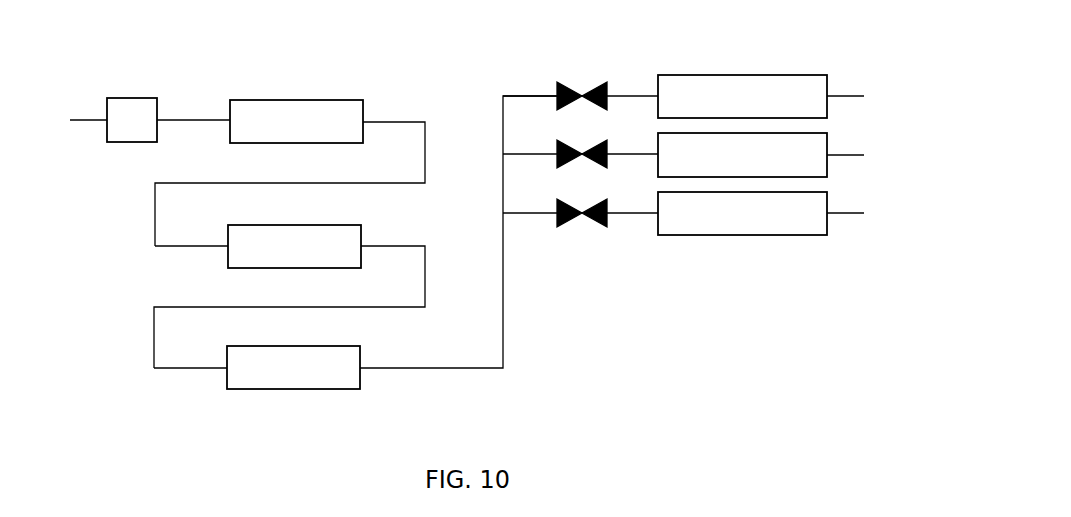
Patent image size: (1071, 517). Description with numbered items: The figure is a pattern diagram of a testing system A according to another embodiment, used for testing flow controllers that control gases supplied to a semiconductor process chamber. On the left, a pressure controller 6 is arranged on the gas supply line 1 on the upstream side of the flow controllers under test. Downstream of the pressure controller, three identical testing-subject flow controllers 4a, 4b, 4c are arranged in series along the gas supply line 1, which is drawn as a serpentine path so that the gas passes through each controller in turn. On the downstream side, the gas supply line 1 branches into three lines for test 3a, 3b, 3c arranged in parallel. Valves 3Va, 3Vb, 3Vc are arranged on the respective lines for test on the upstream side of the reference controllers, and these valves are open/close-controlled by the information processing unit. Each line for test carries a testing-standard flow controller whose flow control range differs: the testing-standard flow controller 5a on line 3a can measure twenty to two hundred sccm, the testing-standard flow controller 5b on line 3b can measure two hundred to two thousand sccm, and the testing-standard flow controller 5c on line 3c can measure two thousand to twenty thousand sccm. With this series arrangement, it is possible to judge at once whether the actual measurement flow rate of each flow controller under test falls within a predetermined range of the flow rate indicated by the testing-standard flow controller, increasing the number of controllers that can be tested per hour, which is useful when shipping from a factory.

The testing system A is at (280, 54).
The pressure controller 6 is at (107, 106).
The testing-subject flow controller 4a is at (230, 108).
The testing-subject flow controller 4b is at (228, 234).
The testing-subject flow controller 4c is at (227, 356).
The gas supply line 1 is at (407, 122).
The line for test 3a is at (550, 96).
The line for test 3b is at (550, 154).
The line for test 3c is at (550, 213).
The valve 3Va is at (584, 92).
The valve 3Vb is at (584, 150).
The valve 3Vc is at (584, 209).
The testing-standard flow controller 5a is at (658, 84).
The testing-standard flow controller 5b is at (658, 142).
The testing-standard flow controller 5c is at (658, 201).